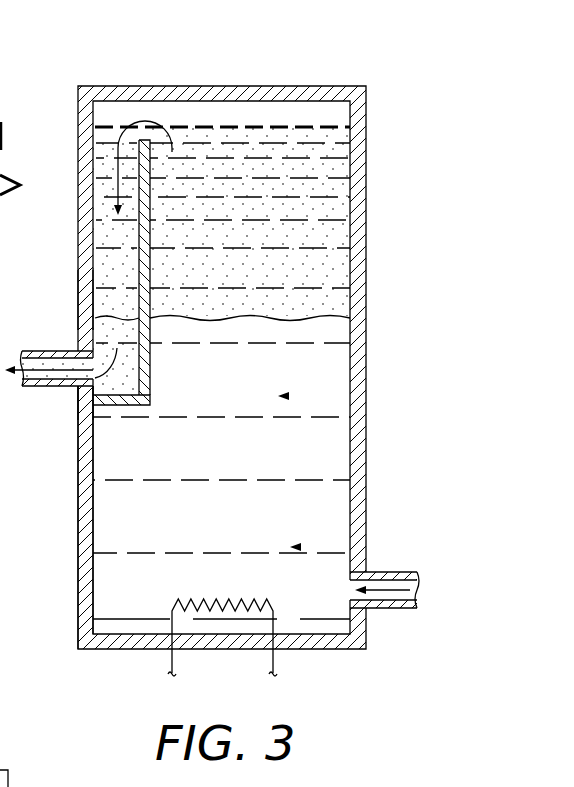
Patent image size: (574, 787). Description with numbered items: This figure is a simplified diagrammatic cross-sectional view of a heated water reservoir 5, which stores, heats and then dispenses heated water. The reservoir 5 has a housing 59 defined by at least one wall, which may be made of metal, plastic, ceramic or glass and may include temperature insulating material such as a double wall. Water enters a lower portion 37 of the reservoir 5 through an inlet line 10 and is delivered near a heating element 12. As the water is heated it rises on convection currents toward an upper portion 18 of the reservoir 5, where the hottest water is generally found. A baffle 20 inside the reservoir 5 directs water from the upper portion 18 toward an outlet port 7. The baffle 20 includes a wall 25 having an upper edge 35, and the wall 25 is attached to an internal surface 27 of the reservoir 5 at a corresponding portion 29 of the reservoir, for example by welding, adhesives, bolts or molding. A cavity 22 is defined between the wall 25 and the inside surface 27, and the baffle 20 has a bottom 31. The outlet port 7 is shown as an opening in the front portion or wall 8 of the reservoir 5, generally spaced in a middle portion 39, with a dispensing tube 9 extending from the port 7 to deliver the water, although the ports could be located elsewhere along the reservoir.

The heated water reservoir 5 is at (355, 70).
The outlet port 7 is at (80, 387).
The front portion 8 is at (80, 535).
The dispensing tube 9 is at (40, 388).
The inlet line 10 is at (388, 606).
The heating element 12 is at (172, 623).
The upper portion 18 is at (300, 188).
The baffle 20 is at (157, 170).
The cavity 22 is at (110, 228).
The wall 25 is at (153, 228).
The internal surface 27 is at (100, 467).
The corresponding portion 29 is at (95, 281).
The bottom 31 is at (130, 406).
The upper edge 35 is at (145, 135).
The lower portion 37 is at (291, 547).
The middle portion 39 is at (279, 396).
The housing 59 is at (77, 514).